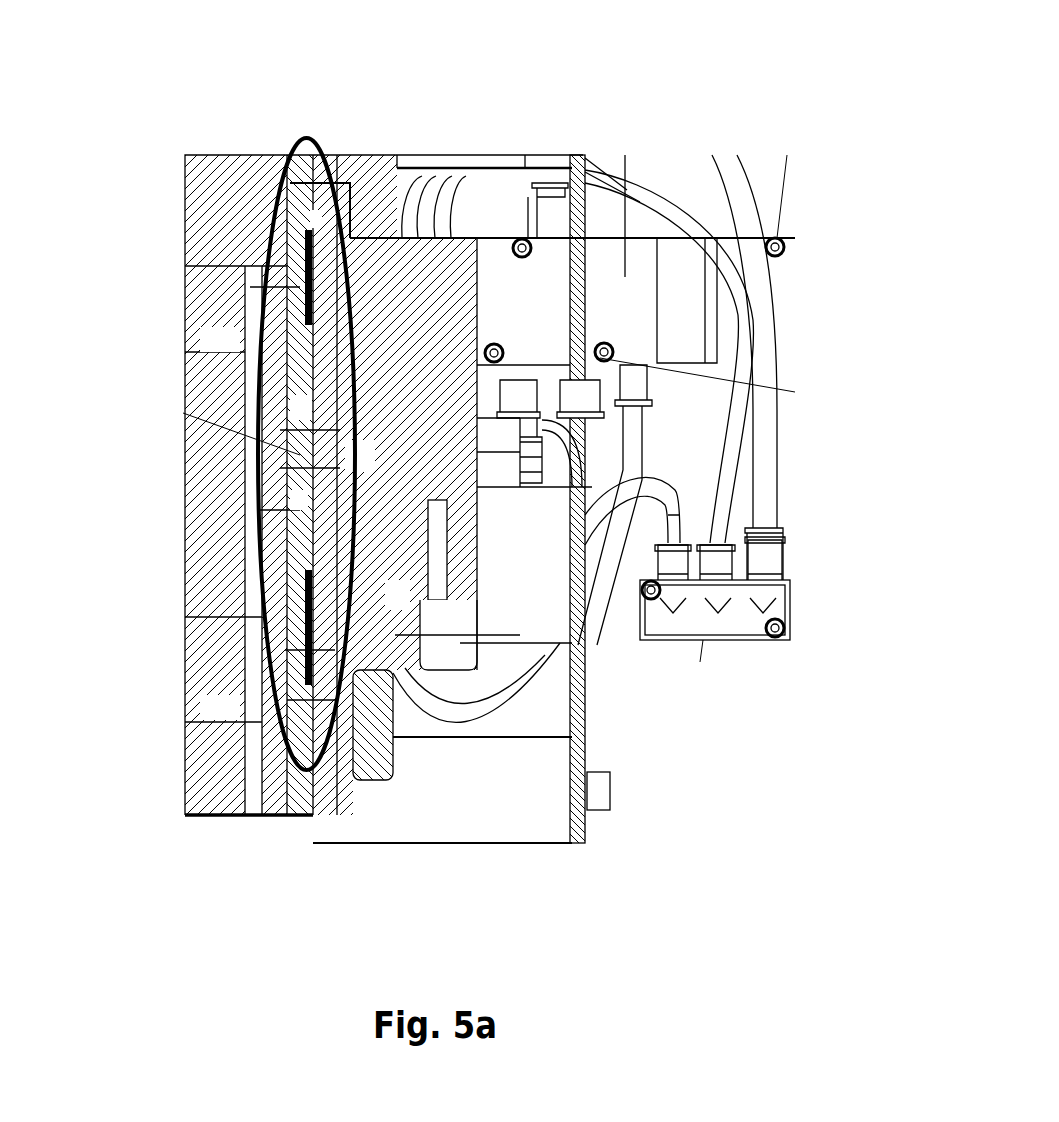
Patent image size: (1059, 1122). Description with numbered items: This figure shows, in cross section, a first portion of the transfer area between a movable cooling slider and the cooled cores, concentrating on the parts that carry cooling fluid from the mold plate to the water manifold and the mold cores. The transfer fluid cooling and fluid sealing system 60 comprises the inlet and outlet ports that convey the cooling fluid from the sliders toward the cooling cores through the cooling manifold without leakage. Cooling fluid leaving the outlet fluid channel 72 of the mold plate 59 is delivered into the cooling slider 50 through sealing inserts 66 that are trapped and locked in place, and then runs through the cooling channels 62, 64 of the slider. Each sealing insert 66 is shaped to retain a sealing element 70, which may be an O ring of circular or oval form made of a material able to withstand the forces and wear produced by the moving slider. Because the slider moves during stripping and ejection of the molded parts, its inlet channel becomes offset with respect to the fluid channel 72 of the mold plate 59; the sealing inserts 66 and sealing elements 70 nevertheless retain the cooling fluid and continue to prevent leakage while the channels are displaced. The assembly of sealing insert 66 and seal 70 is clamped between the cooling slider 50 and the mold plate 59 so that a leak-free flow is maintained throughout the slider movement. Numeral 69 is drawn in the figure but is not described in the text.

The cooling slider 50 is at (372, 650).
The mold plate 59 is at (241, 179).
The transfer fluid cooling and fluid sealing system 60 is at (565, 115).
The cooling channel 62 is at (255, 430).
The cooling channel 64 is at (250, 683).
The sealing insert 66 is at (305, 196).
The spacer strip 69 is at (270, 227).
The sealing element 70 is at (303, 652).
The outlet fluid channel 72 is at (293, 633).